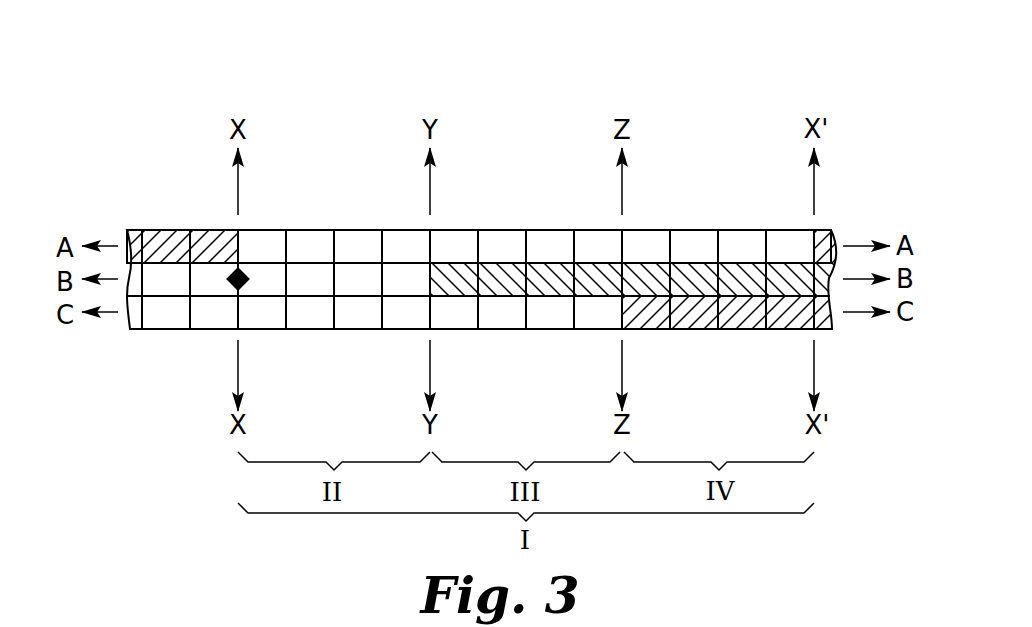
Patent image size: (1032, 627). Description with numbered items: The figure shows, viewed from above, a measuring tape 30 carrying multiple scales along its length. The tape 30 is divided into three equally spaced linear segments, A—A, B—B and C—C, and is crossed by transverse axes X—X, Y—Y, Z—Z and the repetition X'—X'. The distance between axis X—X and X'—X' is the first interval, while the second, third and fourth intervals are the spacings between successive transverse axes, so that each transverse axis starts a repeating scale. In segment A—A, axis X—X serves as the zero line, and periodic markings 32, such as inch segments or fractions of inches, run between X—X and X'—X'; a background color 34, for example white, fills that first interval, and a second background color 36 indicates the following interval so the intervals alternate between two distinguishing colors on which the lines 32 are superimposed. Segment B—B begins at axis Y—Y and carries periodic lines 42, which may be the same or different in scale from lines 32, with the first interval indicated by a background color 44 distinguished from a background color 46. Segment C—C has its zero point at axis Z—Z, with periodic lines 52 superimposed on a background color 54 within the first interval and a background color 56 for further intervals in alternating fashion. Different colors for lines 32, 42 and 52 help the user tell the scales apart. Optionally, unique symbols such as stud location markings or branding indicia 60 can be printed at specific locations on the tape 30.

The tape 30 is at (737, 87).
The periodic markings 32 is at (330, 247).
The background color 34 is at (545, 240).
The second background color 36 is at (157, 242).
The periodic lines 42 is at (514, 272).
The background color 44 is at (600, 272).
The background color 46 is at (357, 278).
The periodic lines 52 is at (710, 313).
The background color 54 is at (748, 312).
The background color 56 is at (153, 320).
The indicia 60 is at (233, 284).